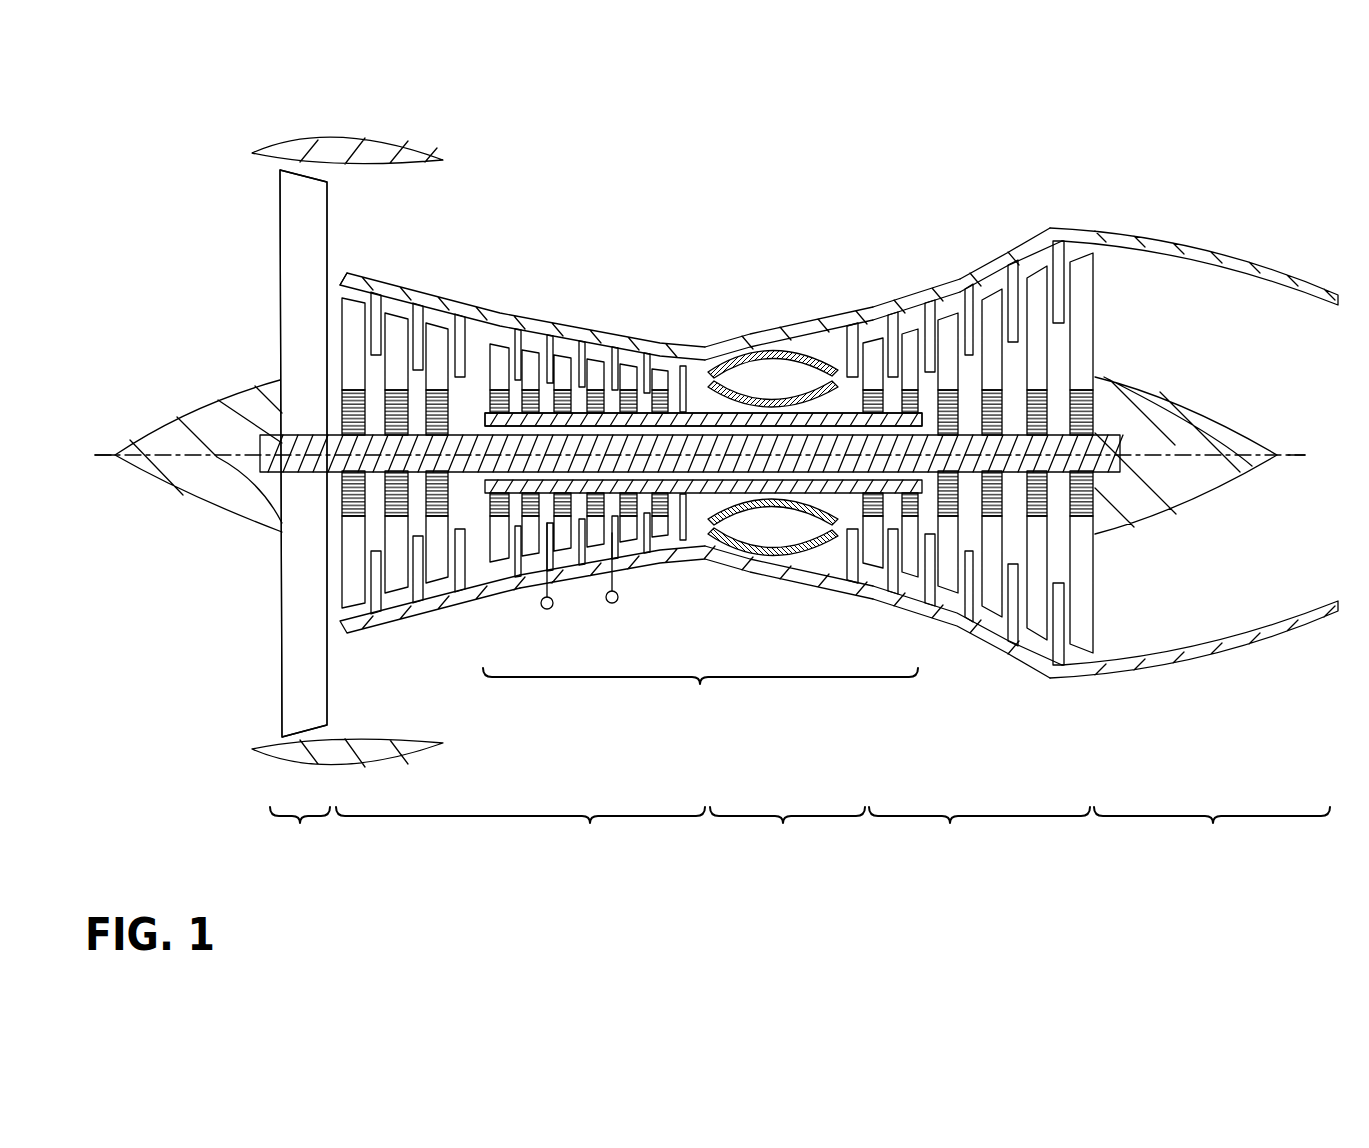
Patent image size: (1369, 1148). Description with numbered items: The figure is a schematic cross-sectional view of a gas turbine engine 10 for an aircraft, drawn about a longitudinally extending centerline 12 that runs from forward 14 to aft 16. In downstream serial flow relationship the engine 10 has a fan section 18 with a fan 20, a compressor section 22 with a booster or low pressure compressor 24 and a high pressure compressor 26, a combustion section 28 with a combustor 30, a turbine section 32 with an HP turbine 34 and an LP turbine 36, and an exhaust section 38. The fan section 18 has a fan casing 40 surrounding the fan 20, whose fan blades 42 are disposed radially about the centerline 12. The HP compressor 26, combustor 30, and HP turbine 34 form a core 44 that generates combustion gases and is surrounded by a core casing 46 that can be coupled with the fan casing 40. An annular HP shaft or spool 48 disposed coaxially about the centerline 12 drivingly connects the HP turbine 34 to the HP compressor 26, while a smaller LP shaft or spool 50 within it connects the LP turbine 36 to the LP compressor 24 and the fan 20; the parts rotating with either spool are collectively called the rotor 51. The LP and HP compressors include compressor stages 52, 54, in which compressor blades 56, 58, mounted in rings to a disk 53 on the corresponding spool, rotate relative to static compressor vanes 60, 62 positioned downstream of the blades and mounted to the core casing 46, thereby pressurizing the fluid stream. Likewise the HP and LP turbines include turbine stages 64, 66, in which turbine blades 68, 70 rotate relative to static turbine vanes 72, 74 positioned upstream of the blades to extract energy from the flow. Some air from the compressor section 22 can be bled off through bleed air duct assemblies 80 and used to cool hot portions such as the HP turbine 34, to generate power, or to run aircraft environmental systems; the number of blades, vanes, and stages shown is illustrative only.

The gas turbine engine 10 is at (139, 67).
The centerline 12 is at (177, 452).
The forward 14 is at (86, 455).
The aft 16 is at (1313, 455).
The fan section 18 is at (300, 832).
The fan 20 is at (272, 237).
The compressor section 22 is at (520, 580).
The low pressure compressor 24 is at (473, 605).
The high pressure compressor 26 is at (637, 573).
The combustion section 28 is at (787, 832).
The combustor 30 is at (834, 353).
The turbine section 32 is at (978, 549).
The HP turbine 34 is at (848, 594).
The LP turbine 36 is at (977, 642).
The exhaust section 38 is at (1194, 542).
The fan casing 40 is at (352, 137).
The fan blades 42 is at (292, 676).
The core 44 is at (700, 692).
The core casing 46 is at (750, 333).
The HP shaft or spool 48 is at (707, 405).
The LP shaft or spool 50 is at (467, 447).
The rotor 51 is at (620, 426).
The compressor stages 52 is at (337, 264).
The disk 53 is at (398, 402).
The compressor stages 54 is at (499, 304).
The compressor blades 56 is at (357, 306).
The compressor blades 58 is at (502, 352).
The static compressor vanes 60 is at (378, 308).
The static compressor vanes 62 is at (517, 380).
The turbine stages 64 is at (880, 307).
The turbine stages 66 is at (1012, 247).
The turbine blades 68 is at (908, 350).
The turbine blades 70 is at (1033, 295).
The static turbine vanes 72 is at (893, 342).
The static turbine vanes 74 is at (1017, 287).
The bleed air duct assemblies 80 is at (601, 601).